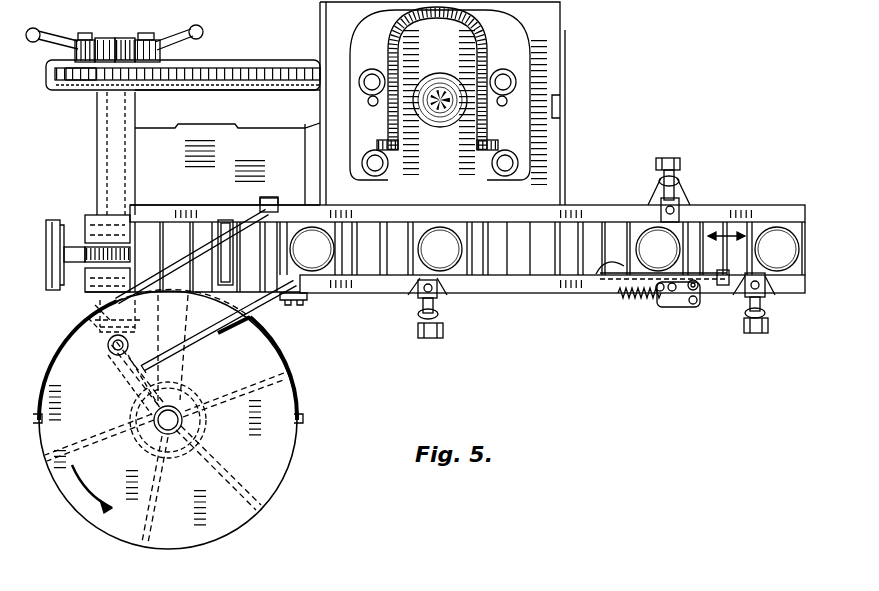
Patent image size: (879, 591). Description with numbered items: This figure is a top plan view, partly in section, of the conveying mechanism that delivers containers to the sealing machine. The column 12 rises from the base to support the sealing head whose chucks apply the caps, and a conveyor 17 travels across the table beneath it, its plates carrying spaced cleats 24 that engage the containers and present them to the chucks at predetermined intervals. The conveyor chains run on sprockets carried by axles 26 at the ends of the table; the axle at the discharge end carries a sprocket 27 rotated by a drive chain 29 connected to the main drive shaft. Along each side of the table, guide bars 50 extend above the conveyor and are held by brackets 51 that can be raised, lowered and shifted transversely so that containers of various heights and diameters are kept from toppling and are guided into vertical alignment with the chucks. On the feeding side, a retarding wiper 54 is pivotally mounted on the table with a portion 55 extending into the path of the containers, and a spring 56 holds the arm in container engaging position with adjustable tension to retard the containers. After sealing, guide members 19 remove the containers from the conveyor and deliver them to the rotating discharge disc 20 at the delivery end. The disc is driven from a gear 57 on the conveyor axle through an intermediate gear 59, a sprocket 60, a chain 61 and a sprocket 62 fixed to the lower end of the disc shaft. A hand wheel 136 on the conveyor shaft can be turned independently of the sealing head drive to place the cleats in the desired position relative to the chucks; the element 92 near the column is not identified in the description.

The column 12 is at (486, 51).
The conveyor 17 is at (171, 232).
The guide members 19 is at (206, 243).
The discharge disc 20 is at (288, 440).
The cleats 24 is at (48, 222).
The axles 26 is at (130, 160).
The sprocket 27 is at (78, 80).
The drive chain 29 is at (240, 66).
The guide bars 50 is at (752, 207).
The brackets 51 is at (681, 168).
The retarding wiper 54 is at (620, 281).
The portion 55 is at (597, 274).
The spring 56 is at (654, 303).
The gear 57 is at (83, 312).
The gear 59 is at (72, 330).
The sprocket 60 is at (105, 362).
The chain 61 is at (114, 393).
The sprocket 62 is at (198, 382).
The bearing 92 is at (441, 108).
The hand wheel 136 is at (203, 30).